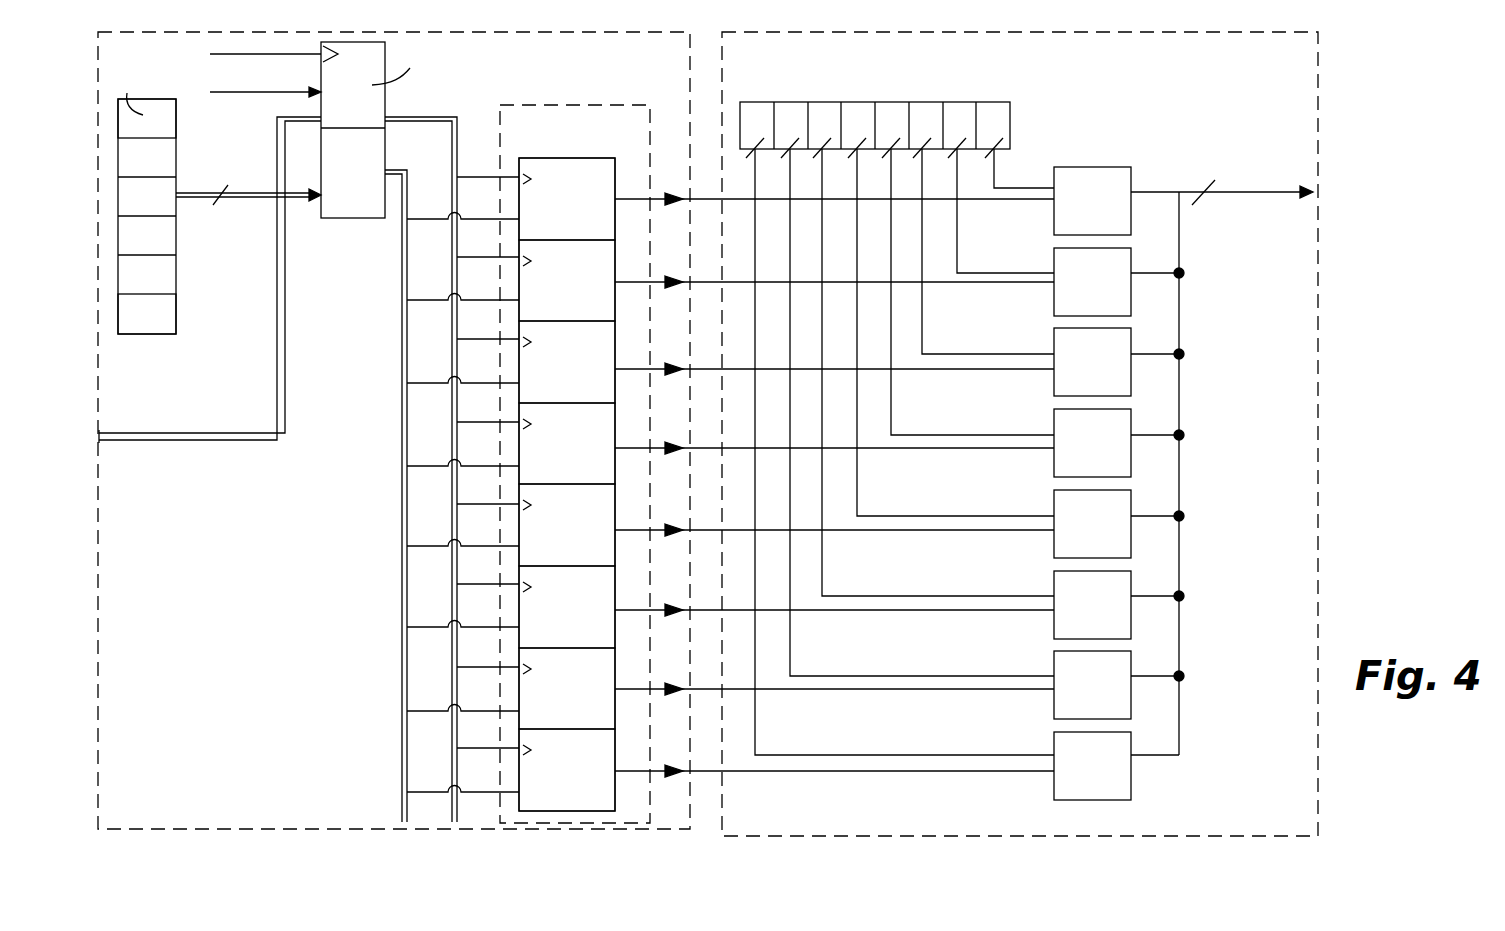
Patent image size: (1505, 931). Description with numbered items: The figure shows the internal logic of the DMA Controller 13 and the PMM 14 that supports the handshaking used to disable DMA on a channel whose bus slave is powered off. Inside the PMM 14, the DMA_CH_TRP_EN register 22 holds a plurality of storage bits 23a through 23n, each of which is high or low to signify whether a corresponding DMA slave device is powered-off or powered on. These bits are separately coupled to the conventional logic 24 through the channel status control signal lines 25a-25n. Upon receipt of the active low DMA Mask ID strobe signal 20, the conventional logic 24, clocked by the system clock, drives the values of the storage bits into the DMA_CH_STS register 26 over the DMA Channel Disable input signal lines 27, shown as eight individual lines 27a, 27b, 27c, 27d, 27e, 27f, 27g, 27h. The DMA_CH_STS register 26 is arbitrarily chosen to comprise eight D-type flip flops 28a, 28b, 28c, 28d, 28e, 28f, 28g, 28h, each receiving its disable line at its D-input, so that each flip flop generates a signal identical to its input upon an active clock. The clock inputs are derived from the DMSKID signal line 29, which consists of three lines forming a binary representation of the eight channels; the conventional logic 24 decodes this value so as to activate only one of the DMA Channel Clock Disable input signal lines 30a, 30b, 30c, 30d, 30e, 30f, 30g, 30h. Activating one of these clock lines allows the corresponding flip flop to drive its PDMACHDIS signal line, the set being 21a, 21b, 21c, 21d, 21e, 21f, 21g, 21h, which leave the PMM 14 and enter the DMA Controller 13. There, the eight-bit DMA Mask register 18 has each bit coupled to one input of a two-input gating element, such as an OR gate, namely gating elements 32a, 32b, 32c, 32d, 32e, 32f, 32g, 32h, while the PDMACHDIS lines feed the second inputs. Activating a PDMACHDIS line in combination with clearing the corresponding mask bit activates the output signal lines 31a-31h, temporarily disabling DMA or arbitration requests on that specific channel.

The DMA Controller 13 is at (1245, 840).
The PMM 14 is at (192, 832).
The DMA Mask register 18 is at (1014, 118).
The DMA Mask ID strobe signal 20 is at (265, 93).
The PDMACHDIS signal line 21a is at (834, 189).
The PDMACHDIS signal line 21b is at (834, 272).
The PDMACHDIS signal line 21c is at (834, 358).
The PDMACHDIS signal line 21d is at (834, 438).
The PDMACHDIS signal line 21e is at (834, 520).
The PDMACHDIS signal line 21f is at (834, 600).
The PDMACHDIS signal line 21g is at (834, 679).
The PDMACHDIS signal line 21h is at (834, 761).
The DMA_CH_TRP_EN register 22 is at (163, 220).
The storage bit 23a is at (177, 106).
The storage bit 23n is at (177, 305).
The conventional logic 24 is at (321, 78).
The channel status control signal lines 25a-25n is at (248, 181).
The DMA_CH_STS register 26 is at (584, 105).
The DMA Channel Disable input signal lines 27 is at (402, 410).
The DMA Channel Disable input signal line 27a is at (463, 208).
The DMA Channel Disable input signal line 27b is at (463, 289).
The DMA Channel Disable input signal line 27c is at (463, 372).
The DMA Channel Disable input signal line 27d is at (463, 455).
The DMA Channel Disable input signal line 27e is at (463, 535).
The DMA Channel Disable input signal line 27f is at (463, 616).
The DMA Channel Disable input signal line 27g is at (463, 700).
The DMA Channel Disable input signal line 27h is at (463, 781).
The D-type flip flop 28a is at (567, 199).
The D-type flip flop 28b is at (567, 280).
The D-type flip flop 28c is at (567, 362).
The D-type flip flop 28d is at (567, 443).
The D-type flip flop 28e is at (567, 525).
The D-type flip flop 28f is at (567, 607).
The D-type flip flop 28g is at (567, 688).
The D-type flip flop 28h is at (567, 770).
The DMSKID signal line 29 is at (128, 445).
The DMA Channel Clock Disable input signal line 30a is at (488, 166).
The DMA Channel Clock Disable input signal line 30b is at (488, 246).
The DMA Channel Clock Disable input signal line 30c is at (488, 328).
The DMA Channel Clock Disable input signal line 30d is at (488, 411).
The DMA Channel Clock Disable input signal line 30e is at (488, 493).
The DMA Channel Clock Disable input signal line 30f is at (488, 573).
The DMA Channel Clock Disable input signal line 30g is at (488, 656).
The DMA Channel Clock Disable input signal line 30h is at (488, 737).
The output signal lines 31a-31h is at (1243, 461).
The gating element 32a is at (1131, 200).
The gating element 32b is at (1131, 281).
The gating element 32c is at (1131, 362).
The gating element 32d is at (1131, 443).
The gating element 32e is at (1131, 524).
The gating element 32f is at (1131, 604).
The gating element 32g is at (1131, 684).
The gating element 32h is at (1131, 763).